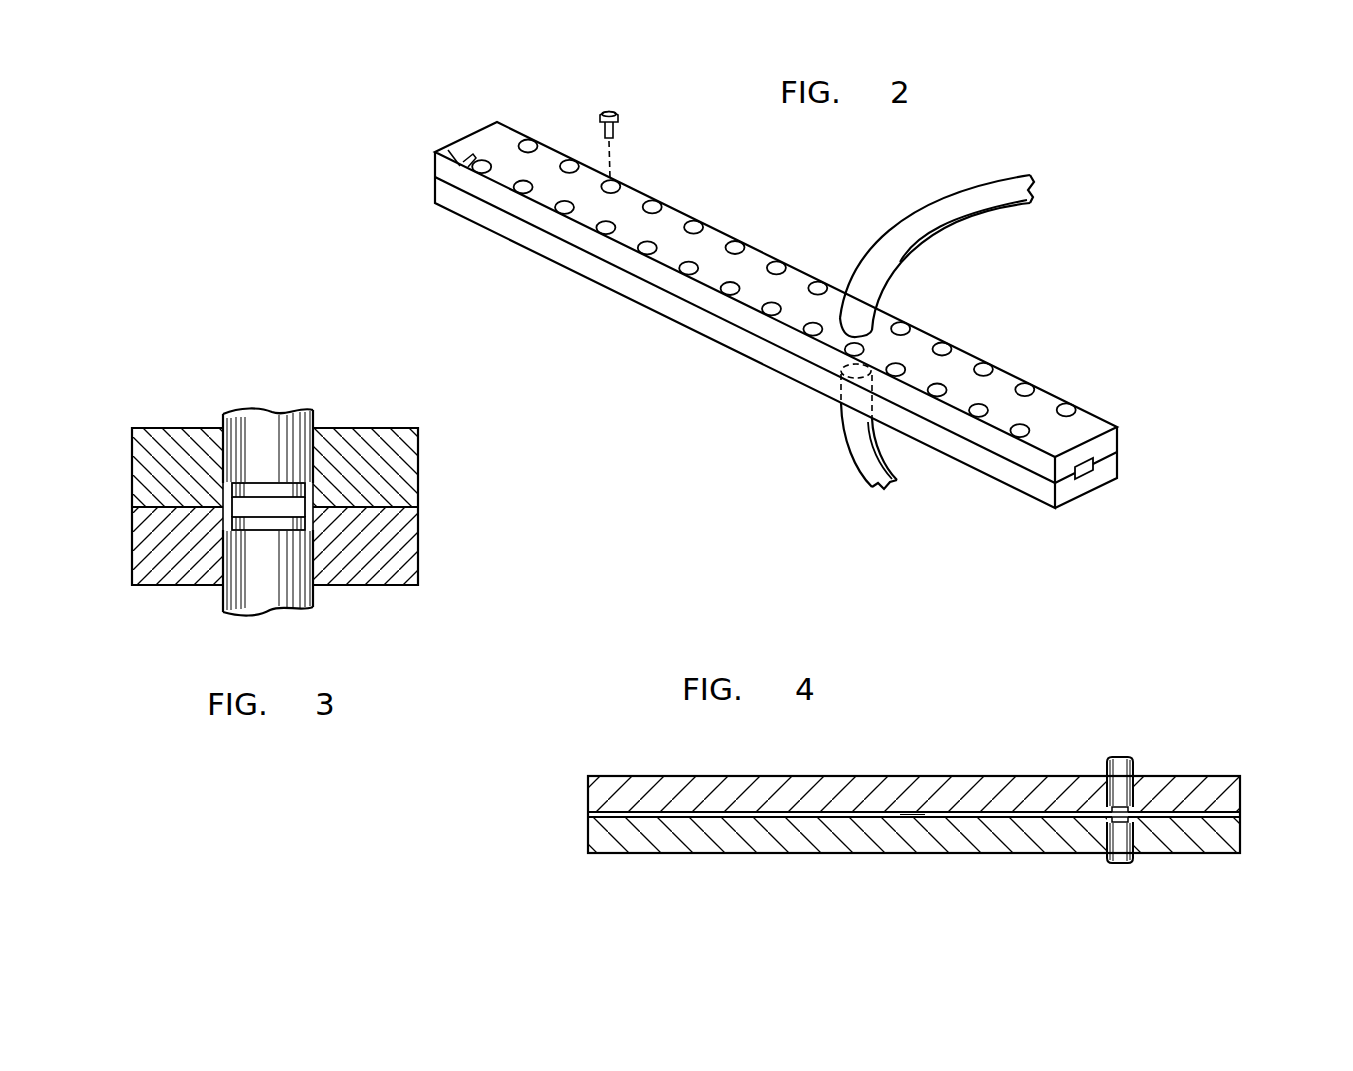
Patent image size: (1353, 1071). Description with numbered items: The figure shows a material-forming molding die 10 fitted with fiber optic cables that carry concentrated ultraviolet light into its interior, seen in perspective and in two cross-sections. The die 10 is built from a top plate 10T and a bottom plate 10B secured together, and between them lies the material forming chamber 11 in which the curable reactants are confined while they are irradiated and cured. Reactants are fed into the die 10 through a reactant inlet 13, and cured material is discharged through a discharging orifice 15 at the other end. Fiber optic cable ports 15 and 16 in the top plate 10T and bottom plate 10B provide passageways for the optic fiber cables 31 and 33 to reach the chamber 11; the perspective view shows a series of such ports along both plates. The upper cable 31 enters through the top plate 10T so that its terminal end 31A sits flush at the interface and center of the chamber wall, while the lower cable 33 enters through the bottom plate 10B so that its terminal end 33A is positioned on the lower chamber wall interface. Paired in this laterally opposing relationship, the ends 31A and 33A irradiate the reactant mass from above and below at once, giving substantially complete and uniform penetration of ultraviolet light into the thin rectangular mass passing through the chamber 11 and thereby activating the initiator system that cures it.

In FIG. 2, the molding die 10 is at (682, 212).
In FIG. 4, the molding die 10 is at (645, 776).
In FIG. 4, the top plate 10T is at (877, 774).
In FIG. 4, the bottom plate 10B is at (730, 842).
In FIG. 2, the material forming chamber 11 is at (1105, 452).
In FIG. 4, the material forming chamber 11 is at (913, 817).
In FIG. 2, the reactant inlet 13 is at (1100, 472).
In FIG. 4, the reactant inlet 13 is at (1240, 815).
In FIG. 2, the fiber optic cable port 15 is at (448, 150).
In FIG. 4, the fiber optic cable port 15 is at (588, 813).
In FIG. 2, the fiber optic cable port 16 is at (837, 384).
In FIG. 3, the fiber optic cable port 16 is at (220, 428).
In FIG. 2, the optic fiber cable 31 is at (995, 176).
In FIG. 3, the optic fiber cable 31 is at (237, 443).
In FIG. 4, the optic fiber cable 31 is at (1135, 763).
In FIG. 3, the terminal end of optic fiber cable 31A is at (280, 494).
In FIG. 4, the terminal end of optic fiber cable 31A is at (1110, 808).
In FIG. 2, the optic fiber cable 33 is at (845, 440).
In FIG. 3, the optic fiber cable 33 is at (258, 598).
In FIG. 4, the optic fiber cable 33 is at (1117, 853).
In FIG. 3, the terminal end of optic fiber cable 33A is at (280, 522).
In FIG. 4, the terminal end of optic fiber cable 33A is at (1134, 826).